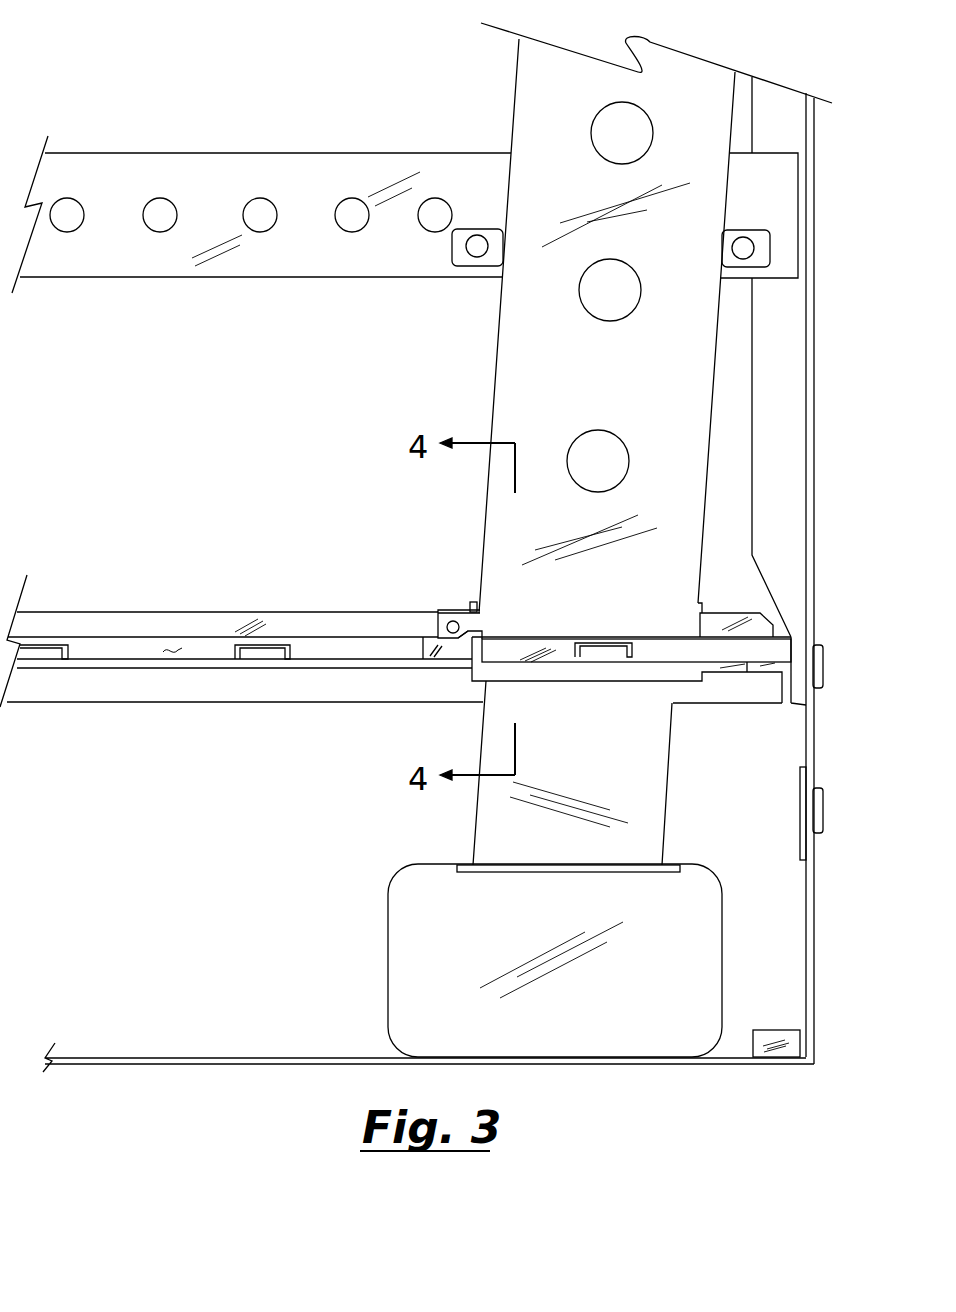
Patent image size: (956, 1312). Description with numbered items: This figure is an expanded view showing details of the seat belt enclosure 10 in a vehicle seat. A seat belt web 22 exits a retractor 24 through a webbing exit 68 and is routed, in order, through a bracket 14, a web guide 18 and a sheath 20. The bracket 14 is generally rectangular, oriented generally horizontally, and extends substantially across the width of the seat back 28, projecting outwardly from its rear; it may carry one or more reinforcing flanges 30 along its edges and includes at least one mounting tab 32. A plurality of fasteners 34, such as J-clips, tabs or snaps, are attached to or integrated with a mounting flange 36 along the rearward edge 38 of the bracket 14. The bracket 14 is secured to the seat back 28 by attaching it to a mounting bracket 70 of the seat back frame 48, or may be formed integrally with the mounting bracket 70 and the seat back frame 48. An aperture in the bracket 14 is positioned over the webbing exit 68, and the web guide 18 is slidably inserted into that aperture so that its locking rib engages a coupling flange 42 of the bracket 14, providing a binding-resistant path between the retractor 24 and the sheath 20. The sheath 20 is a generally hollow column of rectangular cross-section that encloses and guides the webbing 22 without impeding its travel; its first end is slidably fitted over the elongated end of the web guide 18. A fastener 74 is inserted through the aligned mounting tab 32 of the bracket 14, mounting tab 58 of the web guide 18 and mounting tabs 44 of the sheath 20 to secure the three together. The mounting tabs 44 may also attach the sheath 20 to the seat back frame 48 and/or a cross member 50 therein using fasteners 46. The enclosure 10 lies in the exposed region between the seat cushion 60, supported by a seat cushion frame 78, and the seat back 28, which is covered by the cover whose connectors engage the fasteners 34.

The seat belt enclosure 10 is at (140, 60).
The bracket 14 is at (118, 637).
The web guide 18 is at (500, 710).
The sheath 20 is at (497, 364).
The seat belt web 22 is at (478, 825).
The retractor 24 is at (388, 945).
The seat back 28 is at (818, 416).
The reinforcing flange 30 is at (50, 612).
The mounting tab 32 is at (470, 603).
The fasteners 34 is at (45, 651).
The mounting flange 36 is at (172, 650).
The rearward edge 38 is at (316, 652).
The coupling flange 42 is at (716, 613).
The mounting tabs 44 is at (486, 268).
The fasteners 46 is at (458, 262).
The seat back frame 48 is at (808, 514).
The cross member 50 is at (181, 153).
The mounting tab 58 is at (437, 632).
The seat cushion 60 is at (814, 898).
The webbing exit 68 is at (665, 863).
The mounting bracket 70 is at (124, 670).
The fastener 74 is at (436, 618).
The seat cushion frame 78 is at (238, 1057).